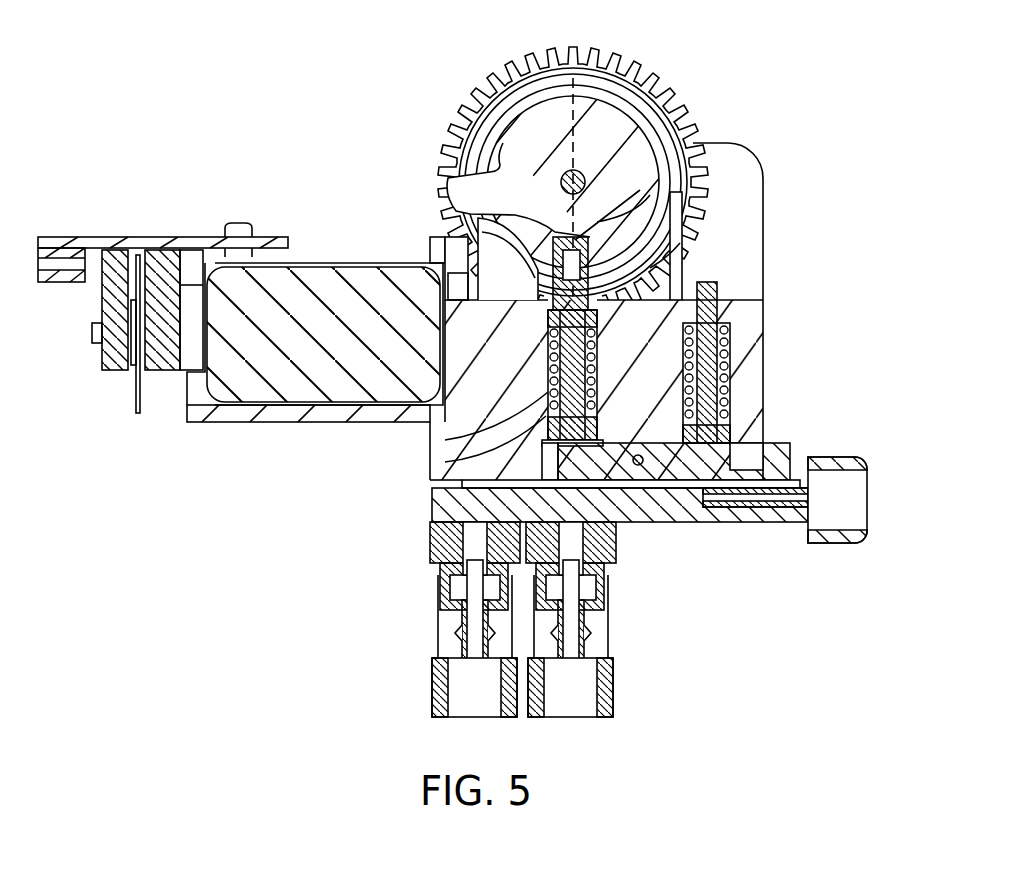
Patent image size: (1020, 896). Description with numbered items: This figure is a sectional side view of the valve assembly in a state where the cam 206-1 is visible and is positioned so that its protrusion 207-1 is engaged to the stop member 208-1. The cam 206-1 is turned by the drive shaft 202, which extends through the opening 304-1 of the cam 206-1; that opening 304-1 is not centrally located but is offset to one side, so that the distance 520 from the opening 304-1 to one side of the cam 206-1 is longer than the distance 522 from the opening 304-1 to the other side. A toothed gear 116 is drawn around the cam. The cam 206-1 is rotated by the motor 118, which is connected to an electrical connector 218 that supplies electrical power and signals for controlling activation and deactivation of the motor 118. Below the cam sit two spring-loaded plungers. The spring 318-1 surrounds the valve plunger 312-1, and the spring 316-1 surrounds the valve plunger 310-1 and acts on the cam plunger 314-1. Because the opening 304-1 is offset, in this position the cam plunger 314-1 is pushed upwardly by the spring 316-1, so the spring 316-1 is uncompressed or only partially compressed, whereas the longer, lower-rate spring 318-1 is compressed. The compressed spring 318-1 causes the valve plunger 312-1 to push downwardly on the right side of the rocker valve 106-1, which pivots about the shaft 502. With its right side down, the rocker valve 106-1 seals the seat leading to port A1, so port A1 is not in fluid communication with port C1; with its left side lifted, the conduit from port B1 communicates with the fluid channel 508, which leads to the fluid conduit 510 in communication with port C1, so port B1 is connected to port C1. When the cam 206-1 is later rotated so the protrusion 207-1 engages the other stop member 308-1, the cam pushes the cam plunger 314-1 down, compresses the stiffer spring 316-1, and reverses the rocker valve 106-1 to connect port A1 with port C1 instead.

The distance 520 is at (578, 112).
The gear 116 is at (630, 80).
The opening 304-1 is at (560, 175).
The cam 206-1 is at (603, 135).
The protrusion 207-1 is at (472, 190).
The drive shaft 202 is at (578, 158).
The stop member 208-1 is at (503, 212).
The distance 522 is at (584, 183).
The cam plunger 314-1 is at (530, 243).
The stop member 308-1 is at (675, 240).
The electrical connector 218 is at (53, 270).
The motor 118 is at (250, 382).
The valve plunger 312-1 is at (705, 358).
The spring 318-1 is at (728, 378).
The spring 316-1 is at (450, 443).
The valve plunger 310-1 is at (540, 447).
The fluid channel 508 is at (468, 503).
The fluid conduit 510 is at (468, 520).
The shaft 502 is at (658, 462).
The rocker valve 106-1 is at (688, 475).
The port A1 is at (862, 498).
The port C1 is at (470, 720).
The port B1 is at (572, 722).